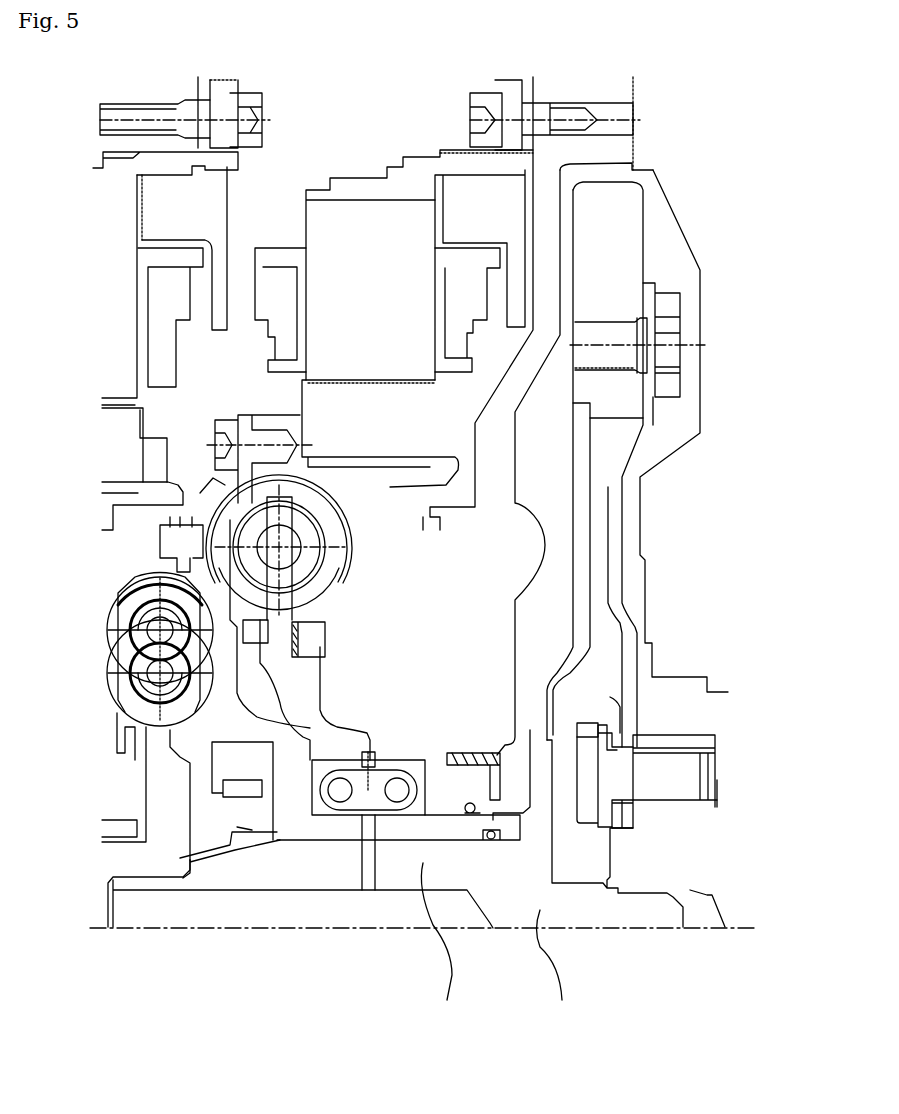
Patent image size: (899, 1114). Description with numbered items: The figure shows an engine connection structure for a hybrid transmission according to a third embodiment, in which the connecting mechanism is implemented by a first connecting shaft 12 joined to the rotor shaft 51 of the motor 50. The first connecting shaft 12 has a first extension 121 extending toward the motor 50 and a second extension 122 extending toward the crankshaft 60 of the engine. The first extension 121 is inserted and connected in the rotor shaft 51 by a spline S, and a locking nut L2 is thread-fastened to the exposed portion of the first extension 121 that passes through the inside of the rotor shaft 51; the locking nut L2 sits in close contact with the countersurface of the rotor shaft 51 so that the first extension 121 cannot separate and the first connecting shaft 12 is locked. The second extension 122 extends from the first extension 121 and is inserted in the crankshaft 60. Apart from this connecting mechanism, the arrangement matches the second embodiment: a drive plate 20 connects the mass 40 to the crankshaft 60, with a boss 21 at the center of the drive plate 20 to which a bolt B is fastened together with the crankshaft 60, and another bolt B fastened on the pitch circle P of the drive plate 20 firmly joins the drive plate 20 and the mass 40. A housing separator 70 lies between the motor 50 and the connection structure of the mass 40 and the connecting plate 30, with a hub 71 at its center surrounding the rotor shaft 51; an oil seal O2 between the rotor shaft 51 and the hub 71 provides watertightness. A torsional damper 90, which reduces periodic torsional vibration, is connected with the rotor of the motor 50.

The motor 50 is at (340, 217).
The mass 40 is at (630, 200).
The pitch circle P is at (610, 333).
The bolt B is at (685, 326).
The torsional damper 90 is at (137, 569).
The housing separator 70 is at (500, 443).
The connecting plate 30 is at (585, 566).
The drive plate 20 is at (622, 602).
The oil seal O2 is at (490, 782).
The hub 71 is at (330, 742).
The locking nut L2 is at (235, 817).
The boss 21 is at (630, 822).
The crankshaft 60 is at (657, 865).
The spline S is at (317, 847).
The rotor shaft 51 is at (403, 830).
The first extension 121 is at (446, 950).
The second extension 122 is at (559, 974).
The first connecting shaft 12 is at (562, 1036).